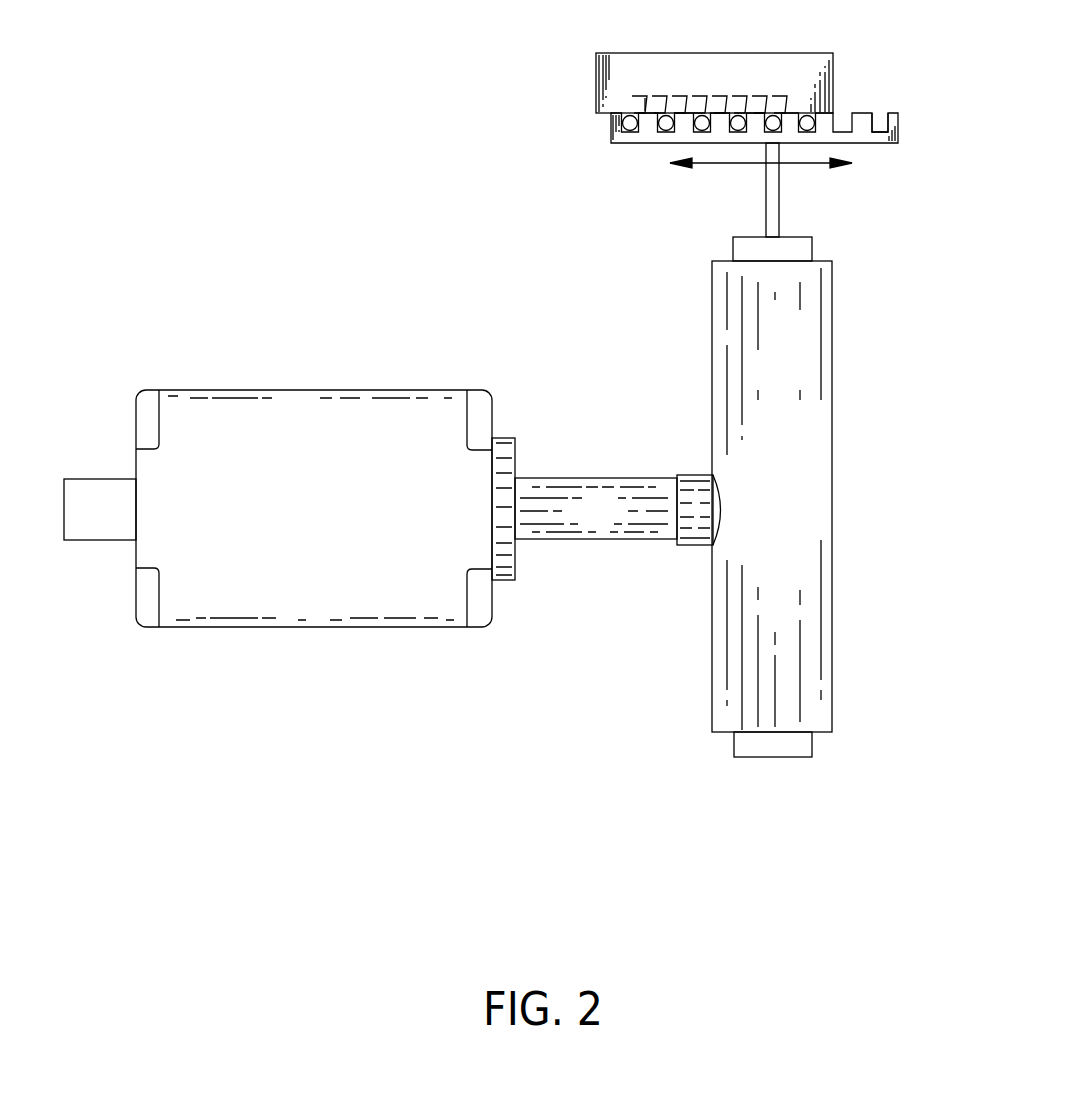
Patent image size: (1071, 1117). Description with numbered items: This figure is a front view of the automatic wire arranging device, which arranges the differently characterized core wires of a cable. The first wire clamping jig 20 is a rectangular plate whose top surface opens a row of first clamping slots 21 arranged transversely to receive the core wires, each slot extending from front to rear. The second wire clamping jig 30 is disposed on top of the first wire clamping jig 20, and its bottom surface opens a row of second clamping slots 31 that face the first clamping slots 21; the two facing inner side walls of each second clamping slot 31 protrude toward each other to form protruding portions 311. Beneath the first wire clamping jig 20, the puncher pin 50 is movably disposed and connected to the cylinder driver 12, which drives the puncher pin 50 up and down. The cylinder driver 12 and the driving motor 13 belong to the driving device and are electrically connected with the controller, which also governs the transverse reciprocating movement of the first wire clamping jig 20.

The cylinder driver 12 is at (815, 434).
The driving motor 13 is at (325, 427).
The first wire clamping jig 20 is at (785, 97).
The first clamping slot 21 is at (878, 118).
The second wire clamping jig 30 is at (684, 60).
The second clamping slot 31 is at (640, 107).
The protruding portion 311 is at (646, 108).
The puncher pin 50 is at (770, 208).